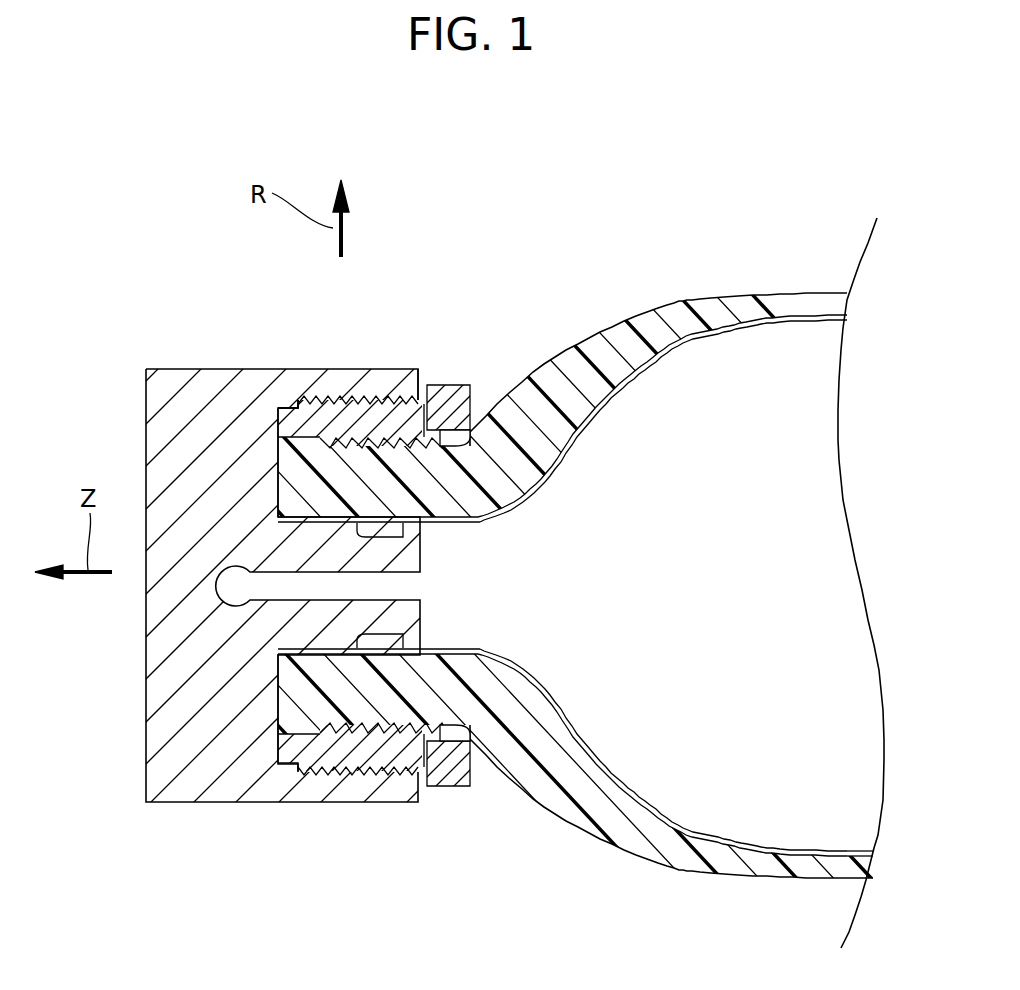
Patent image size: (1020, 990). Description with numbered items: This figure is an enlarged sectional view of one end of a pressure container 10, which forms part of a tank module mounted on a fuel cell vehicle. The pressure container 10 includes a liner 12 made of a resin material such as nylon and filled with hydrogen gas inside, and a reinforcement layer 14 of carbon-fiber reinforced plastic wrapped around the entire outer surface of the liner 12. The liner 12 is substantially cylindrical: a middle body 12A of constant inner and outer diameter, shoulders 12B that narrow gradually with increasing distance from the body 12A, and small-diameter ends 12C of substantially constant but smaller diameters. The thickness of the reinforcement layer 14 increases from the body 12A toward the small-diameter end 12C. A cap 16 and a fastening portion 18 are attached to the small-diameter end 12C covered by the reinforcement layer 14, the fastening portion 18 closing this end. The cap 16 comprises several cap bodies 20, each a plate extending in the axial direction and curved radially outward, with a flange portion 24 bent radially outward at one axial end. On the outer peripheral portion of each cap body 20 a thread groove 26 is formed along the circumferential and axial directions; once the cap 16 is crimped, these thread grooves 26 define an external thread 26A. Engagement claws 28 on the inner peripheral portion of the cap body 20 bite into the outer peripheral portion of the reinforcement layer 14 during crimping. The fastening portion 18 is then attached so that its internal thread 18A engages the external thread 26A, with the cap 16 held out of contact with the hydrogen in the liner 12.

The pressure container 10 is at (531, 247).
The liner 12 is at (683, 347).
The body 12A is at (797, 322).
The shoulder 12B is at (612, 399).
The small-diameter end 12C is at (378, 530).
The reinforcement layer 14 is at (590, 334).
The cap 16 is at (447, 386).
The fastening portion 18 is at (173, 369).
The internal thread 18A is at (313, 412).
The cap body 20 is at (340, 418).
The flange portion 24 is at (473, 424).
The thread groove 26 is at (358, 771).
The external thread 26A is at (408, 396).
The engagement claw 28 is at (476, 518).